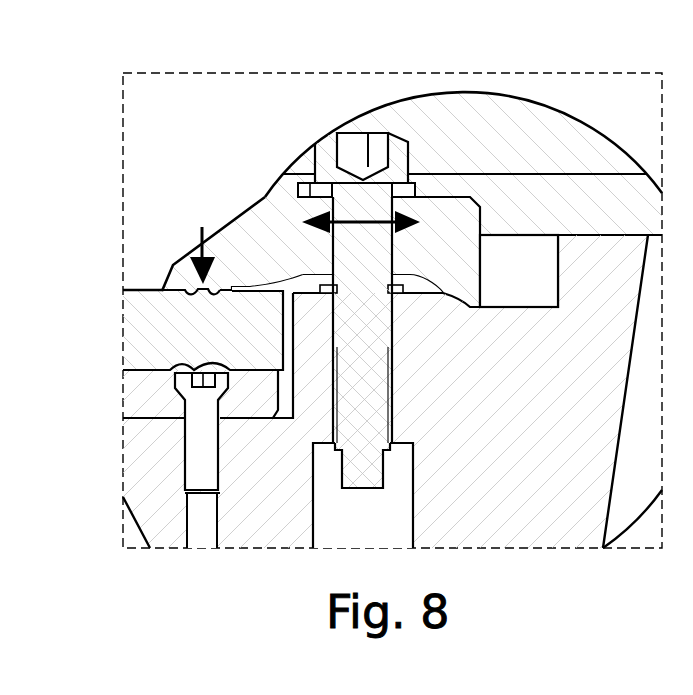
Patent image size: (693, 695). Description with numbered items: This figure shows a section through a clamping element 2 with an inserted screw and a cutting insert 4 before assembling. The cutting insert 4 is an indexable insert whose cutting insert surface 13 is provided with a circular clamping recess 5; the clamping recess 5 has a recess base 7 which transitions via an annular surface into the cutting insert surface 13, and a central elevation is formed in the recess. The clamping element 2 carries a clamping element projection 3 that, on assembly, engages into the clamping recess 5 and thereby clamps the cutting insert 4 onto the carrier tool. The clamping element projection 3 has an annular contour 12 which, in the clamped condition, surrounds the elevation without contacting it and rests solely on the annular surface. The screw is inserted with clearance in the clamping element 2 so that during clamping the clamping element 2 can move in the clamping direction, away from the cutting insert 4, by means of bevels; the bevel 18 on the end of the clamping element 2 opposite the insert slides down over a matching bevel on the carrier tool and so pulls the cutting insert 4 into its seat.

The clamping element 2 is at (290, 218).
The clamping element projection 3 is at (247, 220).
The cutting insert 4 is at (158, 333).
The clamping recess 5 is at (198, 289).
The recess base 7 is at (395, 160).
The annular contour 12 is at (232, 250).
The cutting insert surface 13 is at (140, 290).
The bevel 18 is at (458, 303).